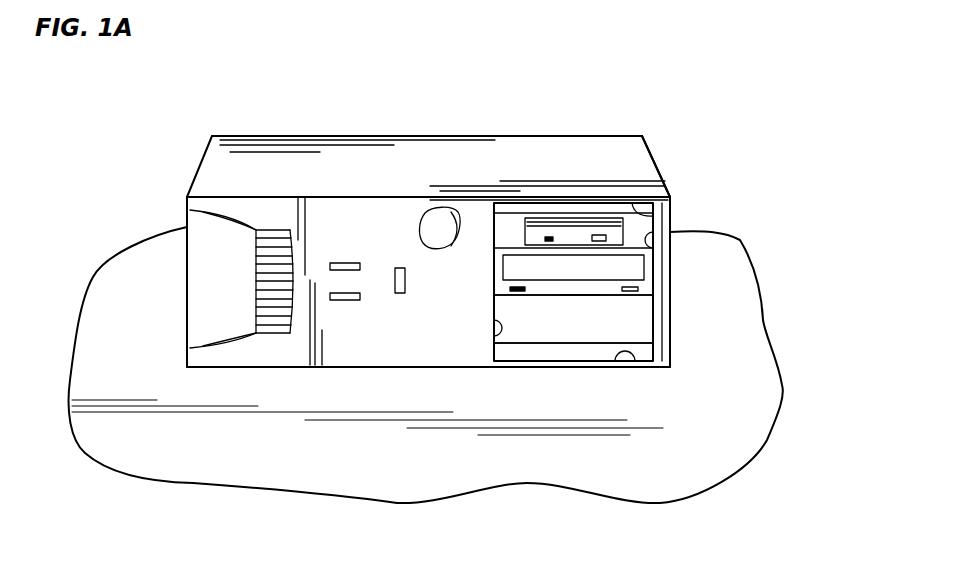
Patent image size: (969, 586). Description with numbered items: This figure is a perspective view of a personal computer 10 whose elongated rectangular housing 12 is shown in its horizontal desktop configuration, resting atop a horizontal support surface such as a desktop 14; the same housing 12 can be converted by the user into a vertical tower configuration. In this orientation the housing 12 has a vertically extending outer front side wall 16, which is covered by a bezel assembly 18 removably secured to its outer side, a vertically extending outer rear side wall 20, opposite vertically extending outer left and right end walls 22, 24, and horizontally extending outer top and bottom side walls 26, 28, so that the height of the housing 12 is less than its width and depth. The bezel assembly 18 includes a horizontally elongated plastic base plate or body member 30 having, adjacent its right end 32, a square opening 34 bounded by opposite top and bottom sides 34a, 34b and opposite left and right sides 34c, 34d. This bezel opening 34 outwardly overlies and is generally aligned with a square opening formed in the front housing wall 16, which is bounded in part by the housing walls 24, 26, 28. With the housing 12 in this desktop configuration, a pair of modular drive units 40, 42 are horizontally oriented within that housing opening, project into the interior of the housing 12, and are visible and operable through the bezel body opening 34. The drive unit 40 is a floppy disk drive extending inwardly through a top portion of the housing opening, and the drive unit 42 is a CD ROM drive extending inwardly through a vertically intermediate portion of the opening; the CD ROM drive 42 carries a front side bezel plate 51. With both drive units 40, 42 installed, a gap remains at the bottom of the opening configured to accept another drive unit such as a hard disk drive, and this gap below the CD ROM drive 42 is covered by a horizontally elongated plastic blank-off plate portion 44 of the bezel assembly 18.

The personal computer 10 is at (628, 75).
The housing 12 is at (660, 153).
The desktop 14 is at (172, 466).
The outer front side wall 16 is at (438, 228).
The bezel assembly 18 is at (296, 354).
The outer rear side wall 20 is at (478, 136).
The outer left end wall 22 is at (187, 298).
The outer right end wall 24 is at (670, 223).
The outer top side wall 26 is at (285, 160).
The outer bottom side wall 28 is at (458, 368).
The bezel body member 30 is at (404, 367).
The right end of bezel body member 32 is at (656, 280).
The square opening 34 is at (647, 307).
The top side of opening 34a is at (655, 210).
The bottom side of opening 34b is at (638, 364).
The left side of opening 34c is at (492, 324).
The right side of opening 34d is at (653, 248).
The floppy disk drive unit 40 is at (500, 240).
The CD ROM drive 42 is at (500, 276).
The blank-off plate portion 44 is at (577, 325).
The front side bezel plate 51 is at (565, 290).